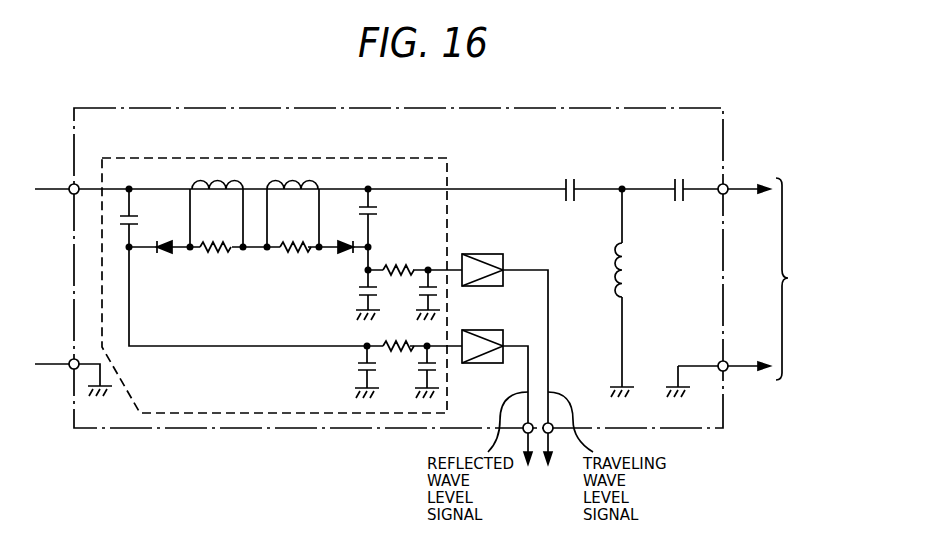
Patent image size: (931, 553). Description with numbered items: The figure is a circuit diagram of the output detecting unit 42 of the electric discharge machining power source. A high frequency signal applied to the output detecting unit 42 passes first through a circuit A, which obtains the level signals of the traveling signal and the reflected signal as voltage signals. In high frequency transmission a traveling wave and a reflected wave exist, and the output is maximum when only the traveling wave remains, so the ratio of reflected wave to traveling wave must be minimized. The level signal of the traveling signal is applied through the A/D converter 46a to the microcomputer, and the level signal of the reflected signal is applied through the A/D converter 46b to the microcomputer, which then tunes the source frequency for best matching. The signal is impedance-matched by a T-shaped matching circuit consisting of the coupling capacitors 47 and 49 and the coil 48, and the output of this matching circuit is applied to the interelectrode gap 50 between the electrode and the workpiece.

The output detecting unit 42 is at (115, 108).
The circuit for obtaining level signals A is at (380, 158).
The A/D converter 46a is at (490, 254).
The A/D converter 46b is at (490, 330).
The coupling capacitor 47 is at (570, 179).
The coil 48 is at (630, 274).
The coupling capacitor 49 is at (679, 179).
The interelectrode gap 50 is at (815, 279).